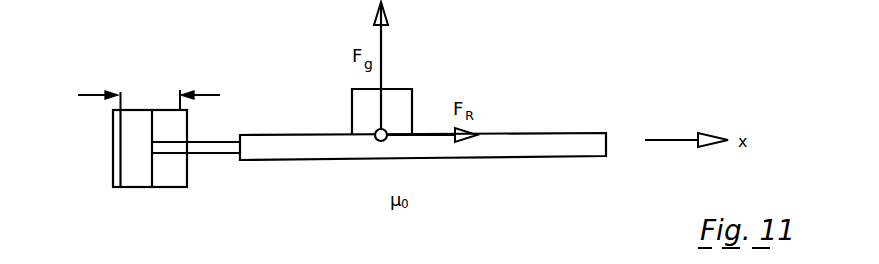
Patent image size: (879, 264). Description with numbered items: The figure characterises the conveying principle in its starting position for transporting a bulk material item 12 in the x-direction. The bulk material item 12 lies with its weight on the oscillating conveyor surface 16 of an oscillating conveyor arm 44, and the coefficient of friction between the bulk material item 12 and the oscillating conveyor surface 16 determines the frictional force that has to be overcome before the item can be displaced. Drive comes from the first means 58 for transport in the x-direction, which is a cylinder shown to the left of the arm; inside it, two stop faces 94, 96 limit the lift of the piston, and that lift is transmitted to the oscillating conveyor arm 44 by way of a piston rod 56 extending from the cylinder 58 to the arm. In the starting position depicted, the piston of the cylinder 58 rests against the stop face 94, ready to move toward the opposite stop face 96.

The bulk material item 12 is at (405, 99).
The oscillating conveyor surface 16 is at (562, 132).
The oscillating conveyor arm 44 is at (277, 148).
The piston rod 56 is at (218, 152).
The first means for transport in the x-direction 58 is at (138, 176).
The stop face 94 is at (84, 96).
The stop face 96 is at (215, 96).